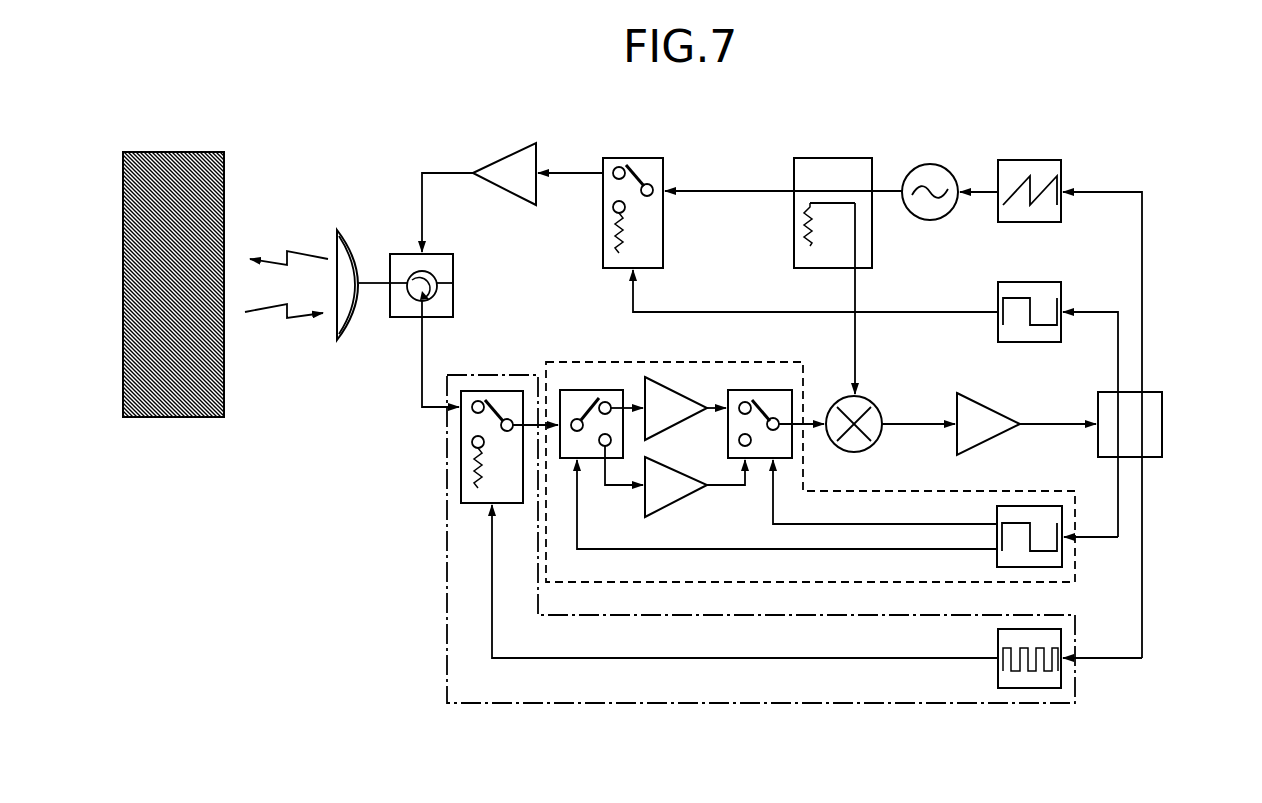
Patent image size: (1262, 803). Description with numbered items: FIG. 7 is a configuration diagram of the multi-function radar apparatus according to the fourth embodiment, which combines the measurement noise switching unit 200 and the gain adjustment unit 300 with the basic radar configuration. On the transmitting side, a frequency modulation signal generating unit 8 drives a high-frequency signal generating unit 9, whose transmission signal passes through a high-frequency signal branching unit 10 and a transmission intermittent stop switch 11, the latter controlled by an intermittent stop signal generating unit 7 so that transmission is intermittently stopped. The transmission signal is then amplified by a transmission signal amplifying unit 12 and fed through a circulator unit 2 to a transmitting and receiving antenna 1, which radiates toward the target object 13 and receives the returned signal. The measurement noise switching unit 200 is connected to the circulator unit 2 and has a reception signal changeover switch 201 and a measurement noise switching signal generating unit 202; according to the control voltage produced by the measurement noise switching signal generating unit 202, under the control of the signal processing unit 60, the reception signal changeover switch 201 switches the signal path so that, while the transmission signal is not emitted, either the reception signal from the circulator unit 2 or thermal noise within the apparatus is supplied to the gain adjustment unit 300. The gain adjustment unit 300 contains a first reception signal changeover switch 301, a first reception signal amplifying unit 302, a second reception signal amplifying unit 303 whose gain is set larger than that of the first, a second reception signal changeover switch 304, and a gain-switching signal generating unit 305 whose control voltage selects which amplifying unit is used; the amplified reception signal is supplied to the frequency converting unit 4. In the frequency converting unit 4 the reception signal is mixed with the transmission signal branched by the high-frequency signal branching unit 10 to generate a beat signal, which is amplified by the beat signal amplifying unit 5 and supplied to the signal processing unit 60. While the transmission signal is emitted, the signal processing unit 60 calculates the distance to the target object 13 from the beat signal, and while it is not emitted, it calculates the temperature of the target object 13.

The transmitting and receiving antenna 1 is at (353, 240).
The circulator unit 2 is at (455, 282).
The frequency converting unit 4 is at (881, 400).
The beat signal amplifying unit 5 is at (990, 406).
The intermittent stop signal generating unit 7 is at (1036, 282).
The frequency modulation signal generating unit 8 is at (1032, 158).
The high-frequency signal generating unit 9 is at (928, 164).
The high-frequency signal branching unit 10 is at (837, 156).
The transmission intermittent stop switch 11 is at (633, 156).
The transmission signal amplifying unit 12 is at (505, 155).
The target object 13 is at (170, 150).
The signal processing unit 60 is at (1165, 424).
The measurement noise switching unit 200 is at (913, 705).
The reception signal changeover switch 201 is at (461, 450).
The measurement noise switching signal generating unit 202 is at (1032, 690).
The gain adjustment unit 300 is at (915, 491).
The first reception signal changeover switch 301 is at (593, 390).
The first reception signal amplifying unit 302 is at (678, 390).
The second reception signal amplifying unit 303 is at (677, 503).
The second reception signal changeover switch 304 is at (767, 390).
The gain-switching signal generating unit 305 is at (1030, 505).